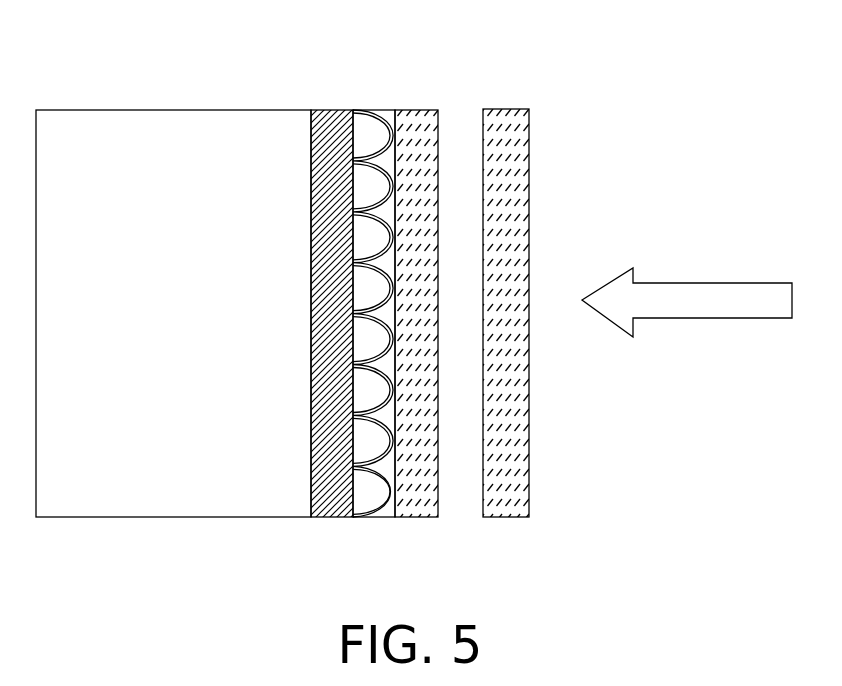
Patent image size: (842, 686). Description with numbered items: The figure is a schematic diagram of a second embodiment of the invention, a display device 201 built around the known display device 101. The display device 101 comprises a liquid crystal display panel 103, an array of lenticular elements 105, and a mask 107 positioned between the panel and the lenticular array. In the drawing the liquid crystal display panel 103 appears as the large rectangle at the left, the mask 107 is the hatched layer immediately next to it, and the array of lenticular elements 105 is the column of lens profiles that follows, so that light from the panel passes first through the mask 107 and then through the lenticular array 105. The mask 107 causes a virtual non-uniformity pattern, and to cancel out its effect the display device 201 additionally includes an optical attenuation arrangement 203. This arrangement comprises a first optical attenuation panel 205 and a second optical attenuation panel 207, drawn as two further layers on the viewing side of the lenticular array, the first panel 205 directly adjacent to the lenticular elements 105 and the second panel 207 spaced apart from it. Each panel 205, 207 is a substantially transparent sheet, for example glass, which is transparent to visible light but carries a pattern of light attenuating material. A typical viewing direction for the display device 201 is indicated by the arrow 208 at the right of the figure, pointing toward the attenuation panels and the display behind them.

The display device 101 is at (37, 85).
The liquid crystal display panel 103 is at (145, 512).
The array of lenticular elements 105 is at (385, 517).
The mask 107 is at (325, 517).
The display device 201 is at (605, 138).
The optical attenuation arrangement 203 is at (530, 80).
The first optical attenuation panel 205 is at (425, 514).
The second optical attenuation panel 207 is at (505, 514).
The arrow 208 is at (735, 282).